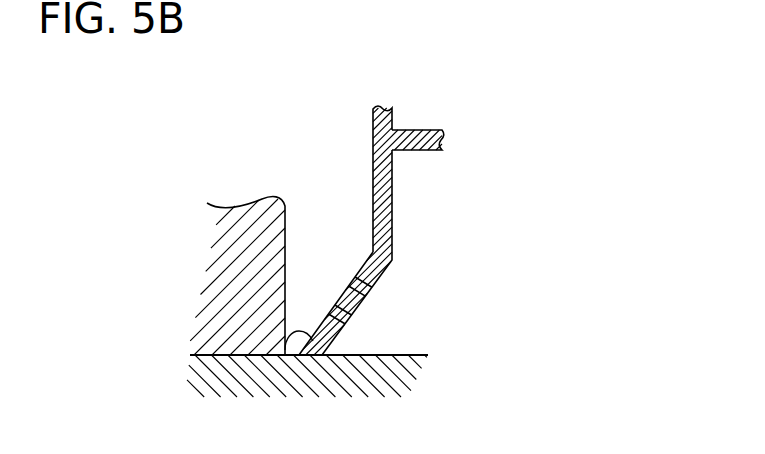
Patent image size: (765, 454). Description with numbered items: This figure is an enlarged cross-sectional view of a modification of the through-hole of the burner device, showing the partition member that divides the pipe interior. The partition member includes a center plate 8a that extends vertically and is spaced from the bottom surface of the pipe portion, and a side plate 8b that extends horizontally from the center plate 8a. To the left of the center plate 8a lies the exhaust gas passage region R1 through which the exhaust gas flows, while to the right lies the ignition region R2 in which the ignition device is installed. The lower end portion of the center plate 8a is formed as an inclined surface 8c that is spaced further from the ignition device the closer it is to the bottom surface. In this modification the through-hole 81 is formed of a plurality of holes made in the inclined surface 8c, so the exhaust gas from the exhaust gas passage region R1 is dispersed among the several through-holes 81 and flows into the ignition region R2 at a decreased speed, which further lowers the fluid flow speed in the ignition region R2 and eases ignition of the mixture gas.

The center plate 8a is at (373, 202).
The side plate 8b is at (421, 130).
The inclined surface 8c is at (290, 334).
The through-hole 81 is at (345, 322).
The exhaust gas passage region R1 is at (306, 246).
The ignition region R2 is at (418, 233).